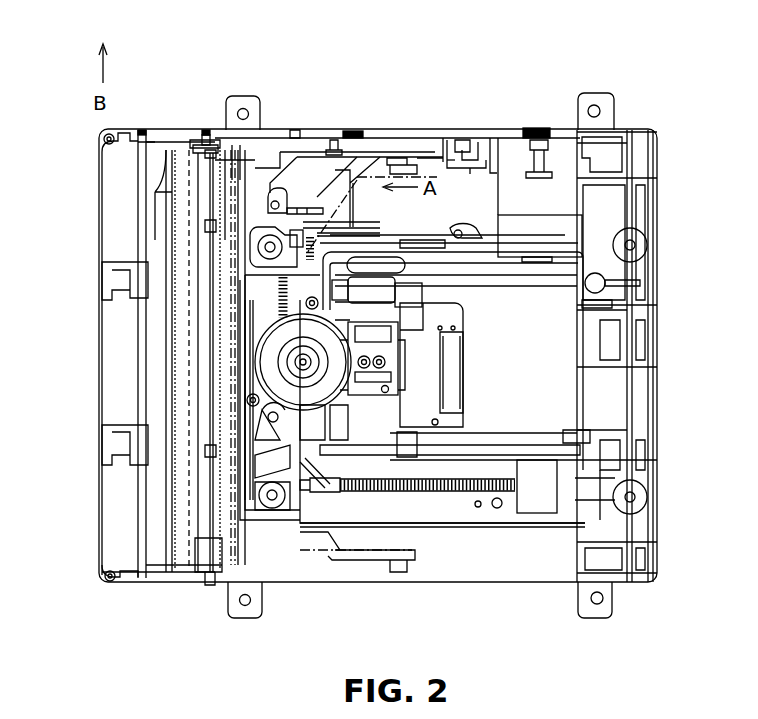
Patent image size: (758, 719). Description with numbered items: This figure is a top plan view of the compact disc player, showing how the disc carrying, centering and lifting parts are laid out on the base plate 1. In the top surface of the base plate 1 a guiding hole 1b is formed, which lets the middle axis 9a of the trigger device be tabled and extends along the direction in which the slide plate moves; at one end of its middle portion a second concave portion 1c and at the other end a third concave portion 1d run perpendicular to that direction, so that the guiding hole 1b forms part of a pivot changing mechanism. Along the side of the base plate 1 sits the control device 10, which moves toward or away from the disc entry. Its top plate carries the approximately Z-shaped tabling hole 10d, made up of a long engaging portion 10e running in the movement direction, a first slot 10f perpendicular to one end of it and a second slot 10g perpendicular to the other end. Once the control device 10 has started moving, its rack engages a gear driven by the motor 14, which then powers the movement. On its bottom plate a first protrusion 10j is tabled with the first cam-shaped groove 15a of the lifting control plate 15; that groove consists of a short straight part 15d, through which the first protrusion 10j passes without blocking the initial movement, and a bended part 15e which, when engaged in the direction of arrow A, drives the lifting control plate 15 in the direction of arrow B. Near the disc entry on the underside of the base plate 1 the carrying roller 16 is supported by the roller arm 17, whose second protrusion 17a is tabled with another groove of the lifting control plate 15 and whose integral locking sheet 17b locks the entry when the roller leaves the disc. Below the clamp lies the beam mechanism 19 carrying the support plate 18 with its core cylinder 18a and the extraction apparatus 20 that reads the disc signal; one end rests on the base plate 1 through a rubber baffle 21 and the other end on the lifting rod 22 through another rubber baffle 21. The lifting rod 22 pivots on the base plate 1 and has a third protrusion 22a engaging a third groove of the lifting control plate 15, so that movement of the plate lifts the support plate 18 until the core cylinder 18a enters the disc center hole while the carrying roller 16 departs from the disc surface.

The base plate 1 is at (660, 300).
The guiding hole 1b is at (535, 324).
The second concave portion 1c is at (455, 242).
The third concave portion 1d is at (490, 242).
The middle axis 9a is at (462, 232).
The control device 10 is at (380, 128).
The tabling hole 10d is at (505, 52).
The engaging portion 10e is at (477, 156).
The first slot 10f is at (458, 150).
The second slot 10g is at (492, 160).
The first protrusion 10j is at (277, 192).
The motor 14 is at (575, 190).
The lifting control plate 15 is at (266, 195).
The first cam-shaped groove 15a is at (165, 55).
The short straight part 15d is at (258, 196).
The bended part 15e is at (230, 140).
The carrying roller 16 is at (218, 556).
The roller arm 17 is at (188, 580).
The second protrusion 17a is at (205, 226).
The locking sheet 17b is at (105, 272).
The support plate 18 is at (327, 397).
The core cylinder 18a is at (410, 400).
The beam mechanism 19 is at (473, 514).
The extraction apparatus 20 is at (327, 367).
The rubber baffle 21 is at (290, 246).
The lifting rod 22 is at (418, 562).
The third protrusion 22a is at (235, 290).